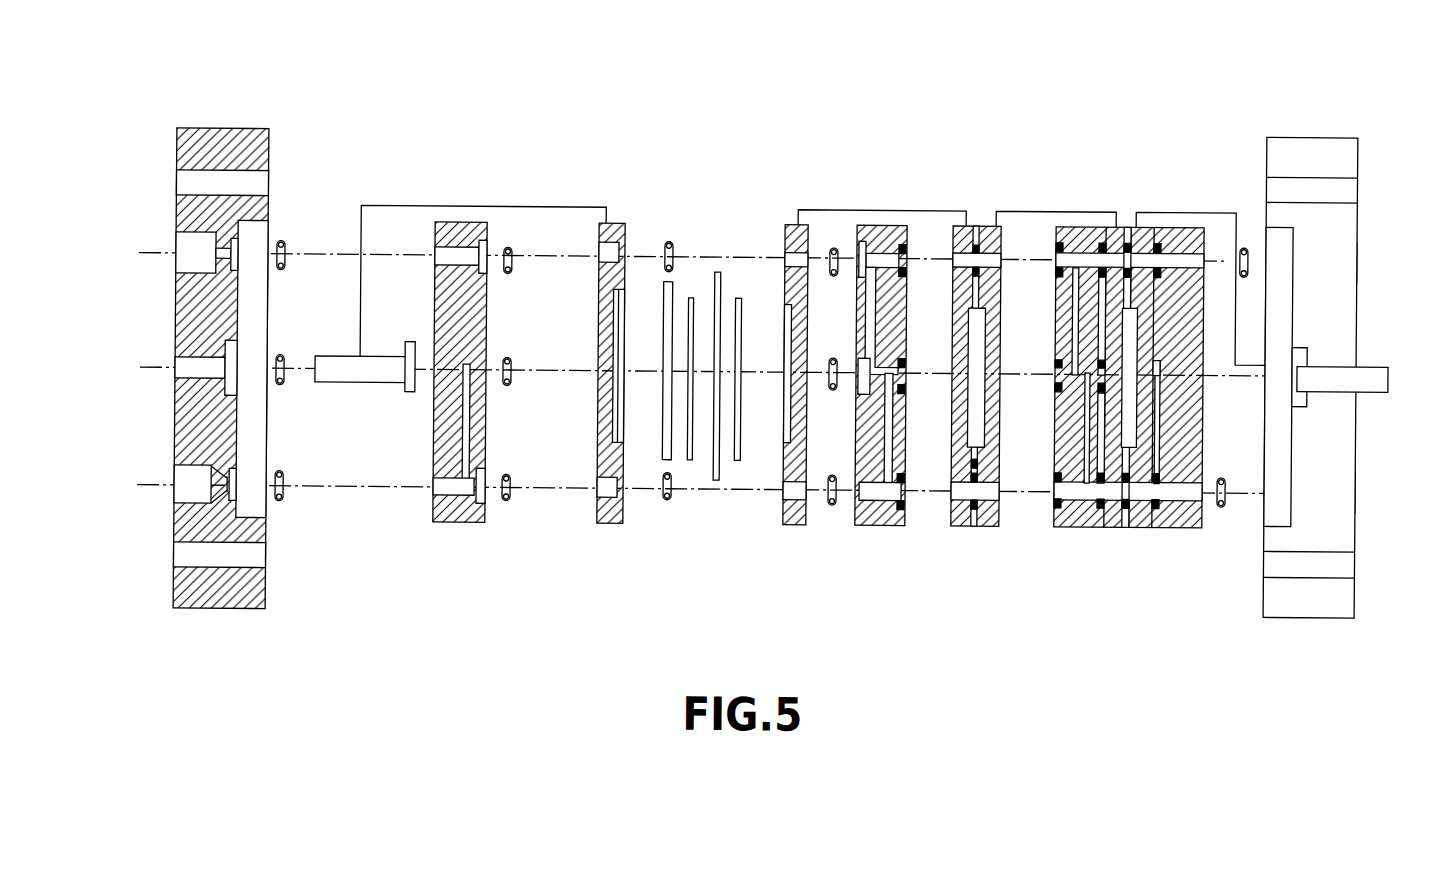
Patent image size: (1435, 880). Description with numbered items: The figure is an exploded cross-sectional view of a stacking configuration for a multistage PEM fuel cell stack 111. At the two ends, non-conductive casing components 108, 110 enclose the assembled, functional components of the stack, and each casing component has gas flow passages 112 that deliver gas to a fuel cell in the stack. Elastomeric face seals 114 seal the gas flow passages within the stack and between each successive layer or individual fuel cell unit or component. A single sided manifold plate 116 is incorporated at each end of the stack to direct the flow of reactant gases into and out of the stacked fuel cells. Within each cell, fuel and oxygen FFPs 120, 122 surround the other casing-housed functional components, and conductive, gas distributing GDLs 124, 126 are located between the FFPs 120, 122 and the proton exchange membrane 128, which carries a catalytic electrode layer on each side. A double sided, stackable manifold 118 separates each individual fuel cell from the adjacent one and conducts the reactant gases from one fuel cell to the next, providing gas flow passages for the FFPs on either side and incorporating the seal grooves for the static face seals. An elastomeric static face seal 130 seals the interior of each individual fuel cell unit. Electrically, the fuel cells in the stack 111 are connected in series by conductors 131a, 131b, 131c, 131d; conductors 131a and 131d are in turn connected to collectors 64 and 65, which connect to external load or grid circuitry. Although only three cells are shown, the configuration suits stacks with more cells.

The collector 64 is at (328, 359).
The collector 65 is at (1366, 362).
The non-conductive casing component 108 is at (268, 153).
The non-conductive casing component 110 is at (1264, 148).
The PEM fuel cell stack 111 is at (914, 88).
The gas flow passages 112 is at (176, 241).
The elastomeric face seals 114 is at (284, 242).
The single sided manifold plate 116 is at (471, 224).
The double sided stackable manifold 118 is at (886, 526).
The fuel FFP 120 is at (612, 224).
The oxygen FFP 122 is at (795, 526).
The GDL 124 is at (690, 297).
The GDL 126 is at (738, 297).
The proton exchange membrane 128 is at (719, 482).
The elastomeric static face seal 130 is at (664, 462).
The conductor 131a is at (421, 208).
The conductor 131b is at (805, 209).
The conductor 131c is at (1028, 209).
The conductor 131d is at (1150, 209).